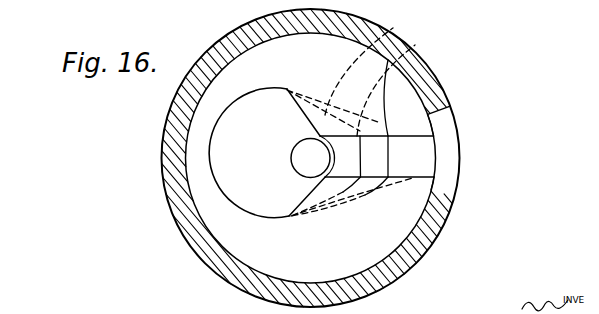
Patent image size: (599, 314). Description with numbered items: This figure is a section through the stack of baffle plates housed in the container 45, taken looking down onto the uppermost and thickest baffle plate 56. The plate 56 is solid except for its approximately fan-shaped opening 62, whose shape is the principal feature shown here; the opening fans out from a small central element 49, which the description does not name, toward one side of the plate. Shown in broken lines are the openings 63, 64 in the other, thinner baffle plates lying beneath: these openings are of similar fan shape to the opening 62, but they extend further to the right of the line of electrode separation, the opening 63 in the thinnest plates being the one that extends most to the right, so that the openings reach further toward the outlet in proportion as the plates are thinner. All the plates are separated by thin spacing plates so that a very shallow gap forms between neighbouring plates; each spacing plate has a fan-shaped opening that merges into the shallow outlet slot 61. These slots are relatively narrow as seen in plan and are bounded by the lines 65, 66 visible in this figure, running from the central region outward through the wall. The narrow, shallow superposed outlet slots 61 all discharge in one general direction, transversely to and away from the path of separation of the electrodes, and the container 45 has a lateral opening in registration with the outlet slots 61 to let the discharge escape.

The baffle plate 56 is at (383, 242).
The fan-shaped opening 62 is at (238, 138).
The shaft 49 is at (307, 161).
The outlet slot 61 is at (407, 154).
The container 45 is at (433, 89).
The bounding line of outlet slot 65 is at (418, 90).
The bounding line of outlet slot 66 is at (410, 180).
The fan-shaped opening 63 is at (415, 45).
The fan-shaped opening 64 is at (393, 28).